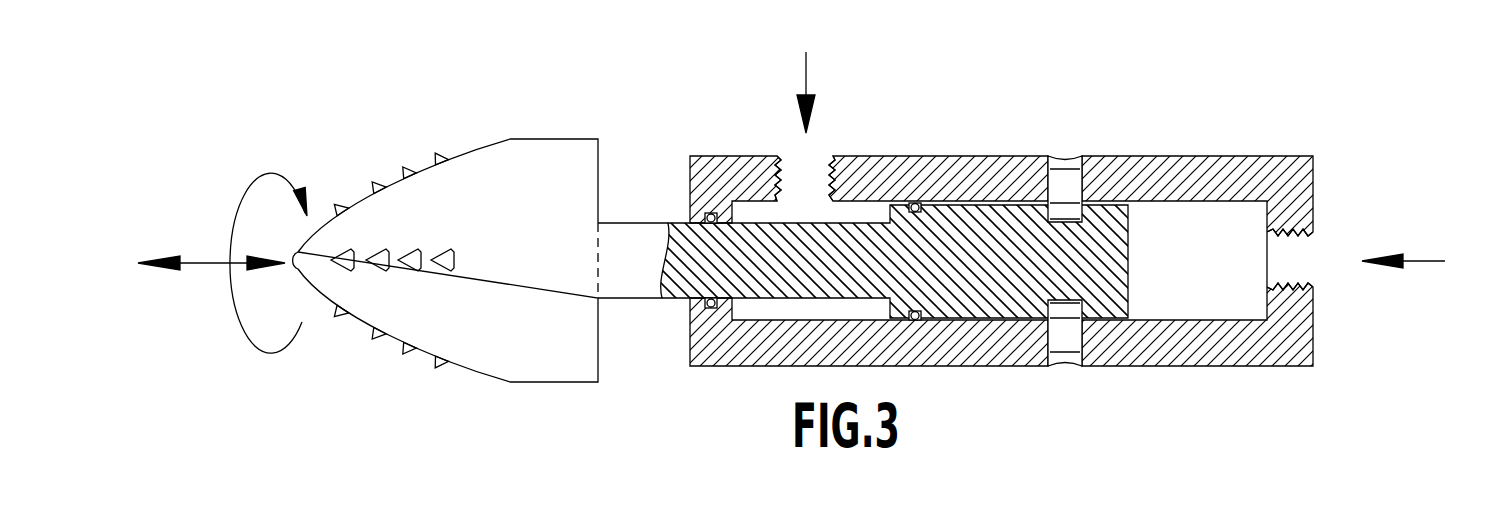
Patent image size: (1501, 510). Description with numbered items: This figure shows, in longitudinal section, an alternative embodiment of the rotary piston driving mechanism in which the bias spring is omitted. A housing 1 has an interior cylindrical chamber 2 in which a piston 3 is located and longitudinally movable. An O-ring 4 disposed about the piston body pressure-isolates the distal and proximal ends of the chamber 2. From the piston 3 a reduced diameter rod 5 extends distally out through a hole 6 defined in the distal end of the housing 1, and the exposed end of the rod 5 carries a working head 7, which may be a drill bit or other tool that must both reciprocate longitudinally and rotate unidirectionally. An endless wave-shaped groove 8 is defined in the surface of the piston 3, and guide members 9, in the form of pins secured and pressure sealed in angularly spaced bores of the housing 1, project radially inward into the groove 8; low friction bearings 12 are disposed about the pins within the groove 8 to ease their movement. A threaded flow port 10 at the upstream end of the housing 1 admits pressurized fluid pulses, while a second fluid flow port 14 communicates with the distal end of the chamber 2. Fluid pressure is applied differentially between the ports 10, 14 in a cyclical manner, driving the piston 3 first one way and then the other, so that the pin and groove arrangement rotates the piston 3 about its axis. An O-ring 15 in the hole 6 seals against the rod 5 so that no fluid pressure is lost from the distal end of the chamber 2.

The housing 1 is at (1197, 177).
The interior cylindrical chamber 2 is at (1297, 253).
The piston 3 is at (957, 230).
The O-ring 4 is at (912, 204).
The rod 5 is at (617, 257).
The hole 6 is at (688, 222).
The working head 7 is at (403, 215).
The wave-shaped groove 8 is at (1082, 297).
The guide members 9 is at (1053, 297).
The flow port 10 is at (1313, 233).
The low friction bearings 12 is at (1083, 202).
The second fluid flow port 14 is at (802, 167).
The O-ring 15 is at (708, 212).